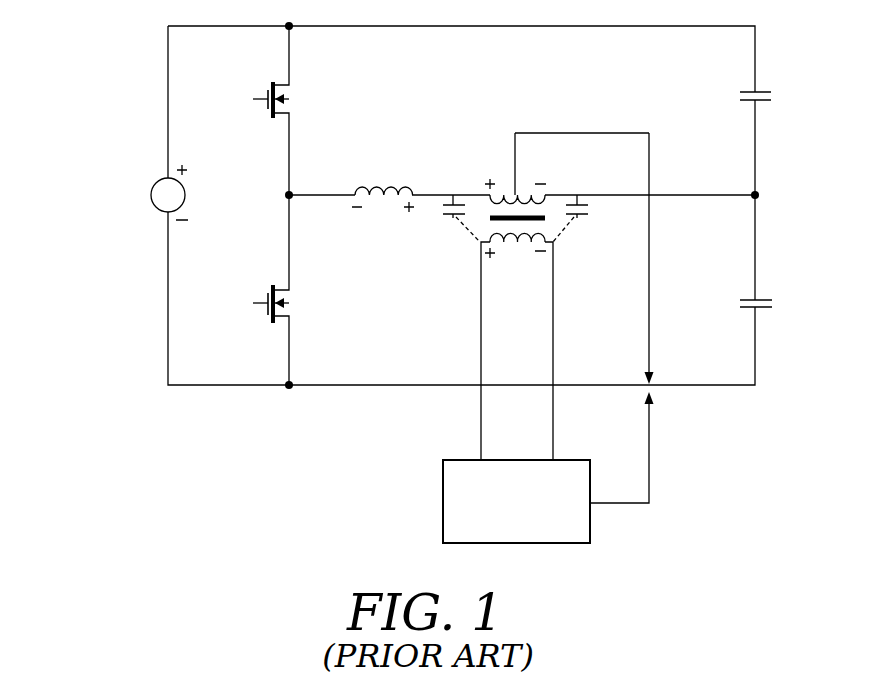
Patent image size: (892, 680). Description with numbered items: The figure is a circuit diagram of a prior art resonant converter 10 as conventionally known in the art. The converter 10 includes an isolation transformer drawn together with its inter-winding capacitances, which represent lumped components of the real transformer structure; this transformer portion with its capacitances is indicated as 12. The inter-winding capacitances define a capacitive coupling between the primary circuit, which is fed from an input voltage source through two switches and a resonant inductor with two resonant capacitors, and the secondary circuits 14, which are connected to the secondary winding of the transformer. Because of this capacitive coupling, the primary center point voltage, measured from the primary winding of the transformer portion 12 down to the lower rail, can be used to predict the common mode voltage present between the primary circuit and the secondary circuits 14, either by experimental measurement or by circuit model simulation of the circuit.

The converter 10 is at (108, 66).
The transformer with integrated capacitors 12 is at (464, 141).
The secondary circuits 14 is at (443, 500).